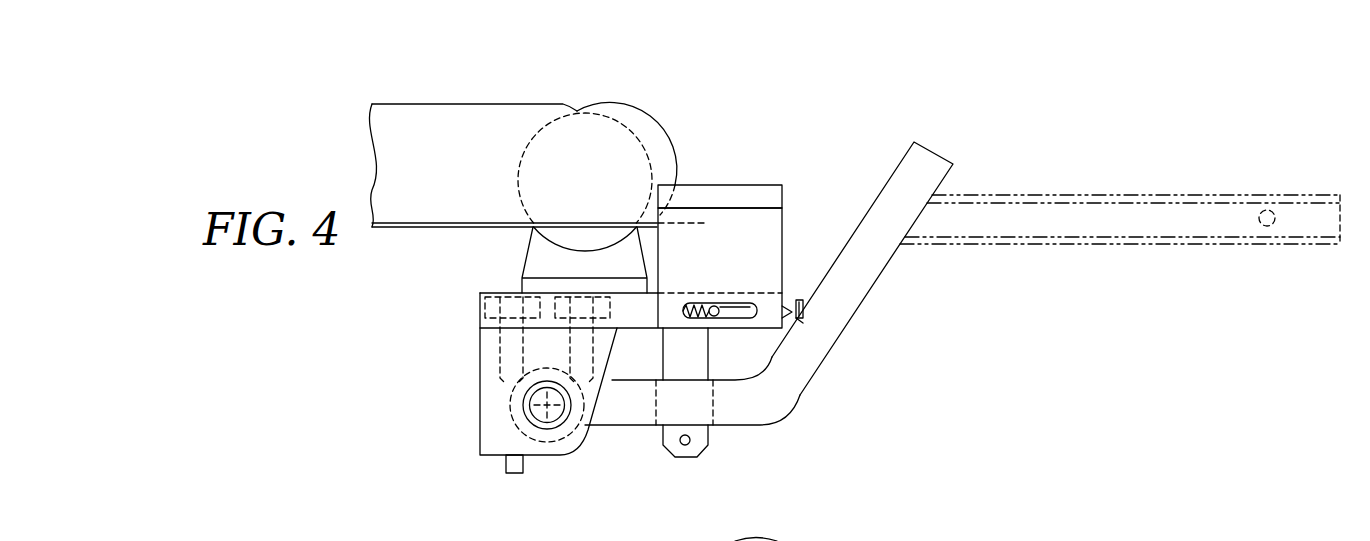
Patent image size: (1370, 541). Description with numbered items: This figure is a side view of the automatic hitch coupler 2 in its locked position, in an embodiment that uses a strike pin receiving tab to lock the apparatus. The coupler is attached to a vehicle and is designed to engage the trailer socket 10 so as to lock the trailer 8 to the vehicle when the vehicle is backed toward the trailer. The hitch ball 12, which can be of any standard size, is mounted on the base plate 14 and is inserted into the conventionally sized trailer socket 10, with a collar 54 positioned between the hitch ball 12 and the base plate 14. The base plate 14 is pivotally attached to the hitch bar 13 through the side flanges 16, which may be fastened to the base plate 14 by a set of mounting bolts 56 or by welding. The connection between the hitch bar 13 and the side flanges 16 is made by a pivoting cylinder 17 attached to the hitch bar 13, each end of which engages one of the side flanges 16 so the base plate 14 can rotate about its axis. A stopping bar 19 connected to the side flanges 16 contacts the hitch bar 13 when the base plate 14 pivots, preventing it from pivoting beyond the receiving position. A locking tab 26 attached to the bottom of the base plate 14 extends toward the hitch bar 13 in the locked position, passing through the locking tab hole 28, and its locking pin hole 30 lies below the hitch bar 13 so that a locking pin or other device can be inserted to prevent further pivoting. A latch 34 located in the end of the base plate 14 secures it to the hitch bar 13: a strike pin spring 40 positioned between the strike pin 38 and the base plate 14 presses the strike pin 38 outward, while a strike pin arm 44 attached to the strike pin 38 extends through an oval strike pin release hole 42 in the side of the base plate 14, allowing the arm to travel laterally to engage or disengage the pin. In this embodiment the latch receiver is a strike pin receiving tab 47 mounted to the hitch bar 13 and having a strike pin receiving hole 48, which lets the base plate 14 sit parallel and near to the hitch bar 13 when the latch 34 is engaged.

The automatic hitch coupler 2 is at (1019, 139).
The trailer 8 is at (421, 165).
The trailer socket 10 is at (638, 122).
The hitch ball 12 is at (571, 181).
The hitch bar 13 is at (871, 245).
The base plate 14 is at (621, 323).
The side flanges 16 is at (486, 435).
The pivoting cylinder 17 is at (558, 422).
The stopping bar 19 is at (506, 465).
The locking tab 26 is at (677, 363).
The locking tab hole 28 is at (672, 410).
The locking pin hole 30 is at (687, 445).
The latch 34 is at (788, 282).
The strike pin 38 is at (799, 320).
The strike pin spring 40 is at (716, 316).
The strike pin release hole 42 is at (690, 318).
The strike pin arm 44 is at (720, 306).
The strike pin receiving tab 47 is at (803, 300).
The strike pin receiving hole 48 is at (805, 311).
The collar 54 is at (537, 271).
The mounting bolts 56 is at (580, 352).